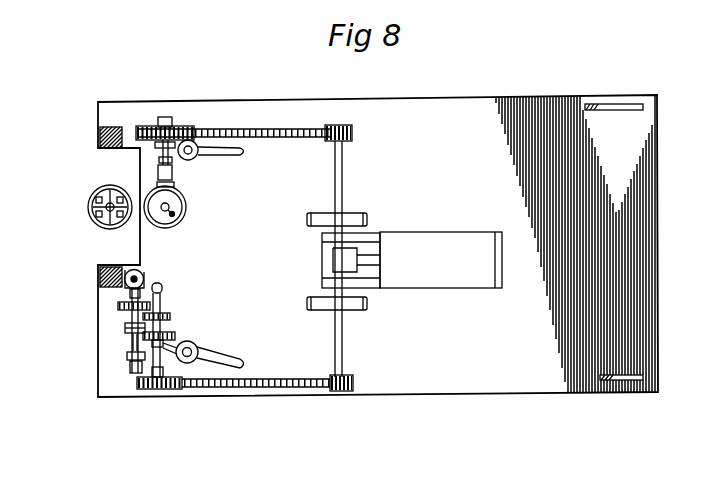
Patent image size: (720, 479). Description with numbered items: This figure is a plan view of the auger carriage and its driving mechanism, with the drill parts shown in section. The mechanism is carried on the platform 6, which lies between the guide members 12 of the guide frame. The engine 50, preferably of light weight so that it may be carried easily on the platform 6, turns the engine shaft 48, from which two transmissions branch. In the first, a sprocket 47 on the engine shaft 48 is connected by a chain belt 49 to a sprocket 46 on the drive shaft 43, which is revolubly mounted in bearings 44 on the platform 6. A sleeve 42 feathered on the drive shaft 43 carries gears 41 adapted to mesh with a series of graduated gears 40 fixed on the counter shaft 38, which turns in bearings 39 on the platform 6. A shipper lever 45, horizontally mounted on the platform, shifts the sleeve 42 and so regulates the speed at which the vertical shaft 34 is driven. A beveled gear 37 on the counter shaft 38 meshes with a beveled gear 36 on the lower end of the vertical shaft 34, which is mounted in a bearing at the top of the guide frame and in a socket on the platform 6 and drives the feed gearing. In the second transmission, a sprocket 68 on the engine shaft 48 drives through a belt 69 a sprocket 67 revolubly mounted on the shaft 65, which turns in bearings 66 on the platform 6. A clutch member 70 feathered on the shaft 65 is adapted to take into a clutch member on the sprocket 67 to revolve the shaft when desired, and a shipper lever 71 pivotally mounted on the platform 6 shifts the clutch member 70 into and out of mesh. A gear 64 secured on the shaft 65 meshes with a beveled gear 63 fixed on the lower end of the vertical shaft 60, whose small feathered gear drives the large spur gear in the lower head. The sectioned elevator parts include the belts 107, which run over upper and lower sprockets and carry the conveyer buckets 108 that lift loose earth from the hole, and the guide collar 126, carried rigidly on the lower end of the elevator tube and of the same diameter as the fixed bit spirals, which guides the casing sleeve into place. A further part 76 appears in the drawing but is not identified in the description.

The platform 6 is at (458, 106).
The guide members 12 is at (100, 138).
The vertical shaft 34 is at (145, 282).
The beveled gear 36 is at (142, 272).
The beveled gear 37 is at (130, 290).
The counter shaft 38 is at (132, 343).
The bearings 39 is at (118, 305).
The graduated gears 40 is at (125, 327).
The gears 41 is at (168, 314).
The sleeve 42 is at (171, 331).
The drive shaft 43 is at (181, 361).
The bearings 44 is at (161, 299).
The shipper lever 45 is at (204, 349).
The sprocket 46 is at (177, 390).
The sprocket 47 is at (350, 392).
The engine shaft 48 is at (343, 167).
The chain belt 49 is at (254, 389).
The engine 50 is at (410, 232).
The vertical shaft 60 is at (175, 215).
The beveled gear 63 is at (187, 206).
The gear 64 is at (175, 185).
The shaft 65 is at (159, 160).
The bearings 66 is at (163, 117).
The sprocket 67 is at (185, 126).
The sprocket 68 is at (345, 127).
The belt 69 is at (278, 128).
The clutch member 70 is at (155, 144).
The shipper lever 71 is at (246, 152).
The wheel 76 is at (96, 220).
The belts 107 is at (106, 190).
The conveyer buckets 108 is at (90, 196).
The guide collar 126 is at (90, 204).